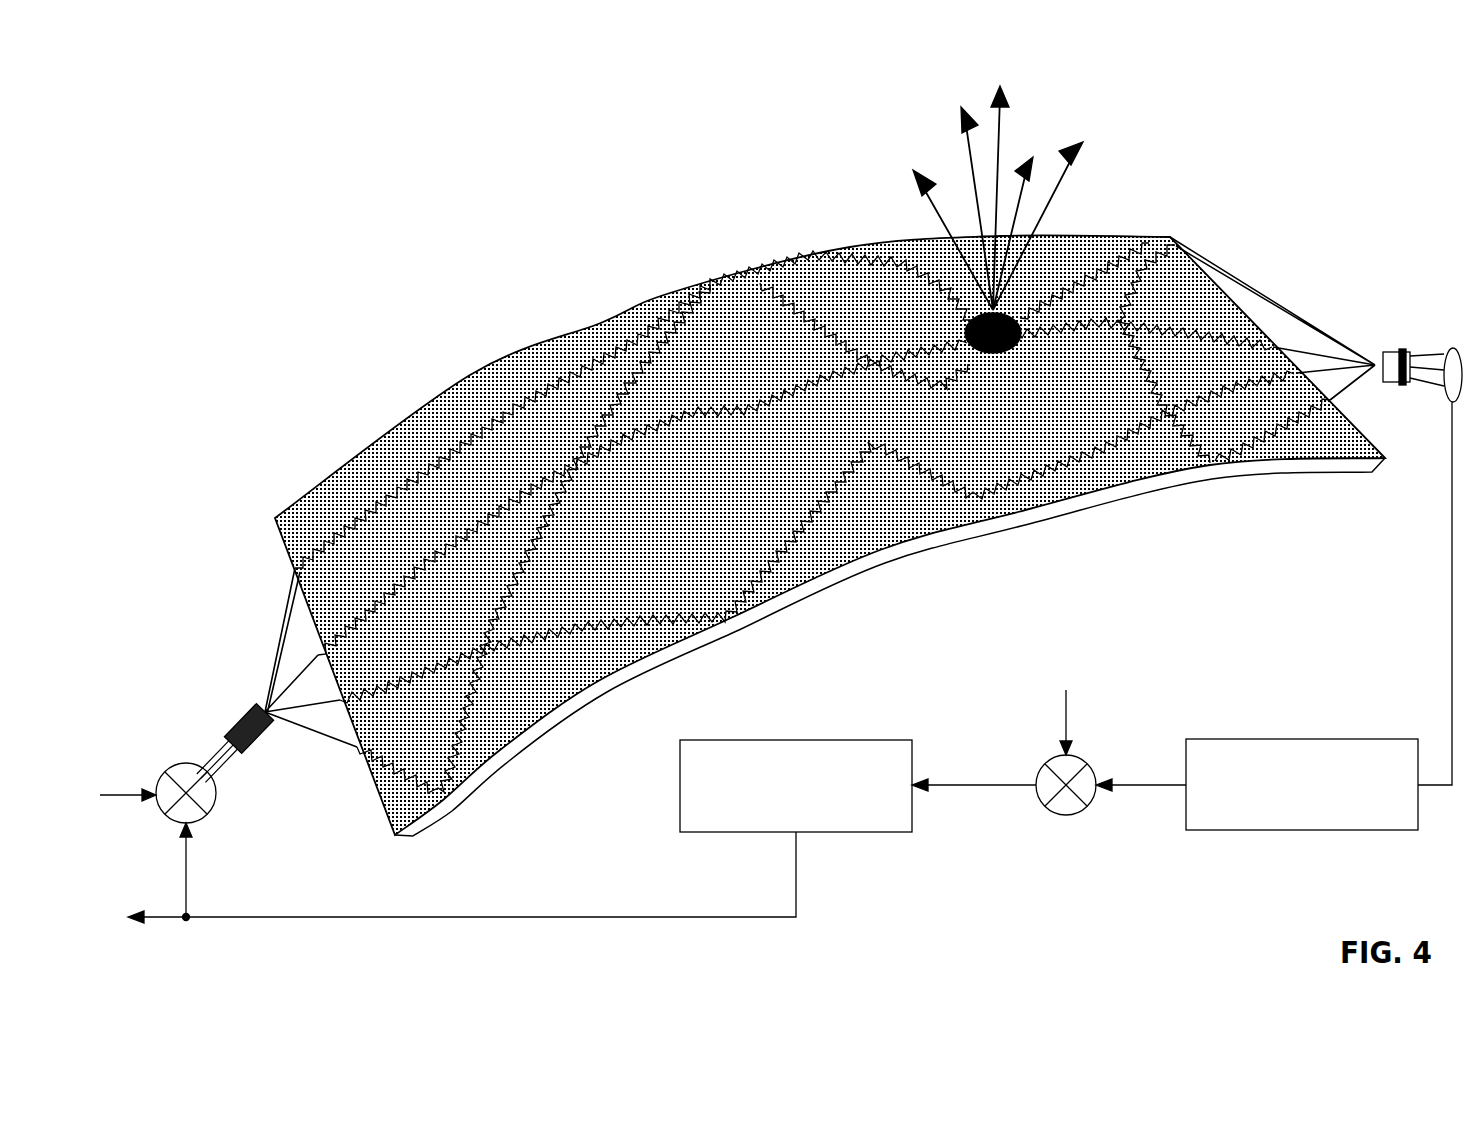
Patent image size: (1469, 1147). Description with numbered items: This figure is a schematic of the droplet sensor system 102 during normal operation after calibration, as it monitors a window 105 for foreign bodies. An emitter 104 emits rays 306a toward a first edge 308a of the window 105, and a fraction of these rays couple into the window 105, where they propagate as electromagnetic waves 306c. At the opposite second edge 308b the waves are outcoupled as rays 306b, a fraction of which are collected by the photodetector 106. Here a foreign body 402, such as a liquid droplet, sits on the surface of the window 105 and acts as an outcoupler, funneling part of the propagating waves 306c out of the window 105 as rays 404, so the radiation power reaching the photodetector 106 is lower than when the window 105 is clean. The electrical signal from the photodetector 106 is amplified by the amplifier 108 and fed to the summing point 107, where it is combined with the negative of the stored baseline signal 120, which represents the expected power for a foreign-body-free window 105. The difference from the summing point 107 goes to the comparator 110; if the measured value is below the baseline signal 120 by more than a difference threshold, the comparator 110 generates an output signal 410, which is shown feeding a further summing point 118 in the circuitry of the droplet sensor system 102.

The droplet sensor system 102 is at (334, 240).
The emitter 104 is at (245, 708).
The window 105 is at (588, 333).
The photodetector 106 is at (1402, 348).
The summing point 107 is at (1045, 762).
The amplifier 108 is at (1256, 740).
The comparator 110 is at (762, 740).
The summing point 118 is at (180, 765).
The baseline signal 120 is at (1148, 584).
The rays 306a is at (320, 740).
The outcoupled rays 306b is at (1235, 280).
The electromagnetic waves 306c is at (520, 408).
The first edge 308a is at (292, 565).
The second edge 308b is at (1357, 430).
The foreign body 402 is at (980, 320).
The rays 404 is at (1003, 143).
The output signal 410 is at (447, 894).